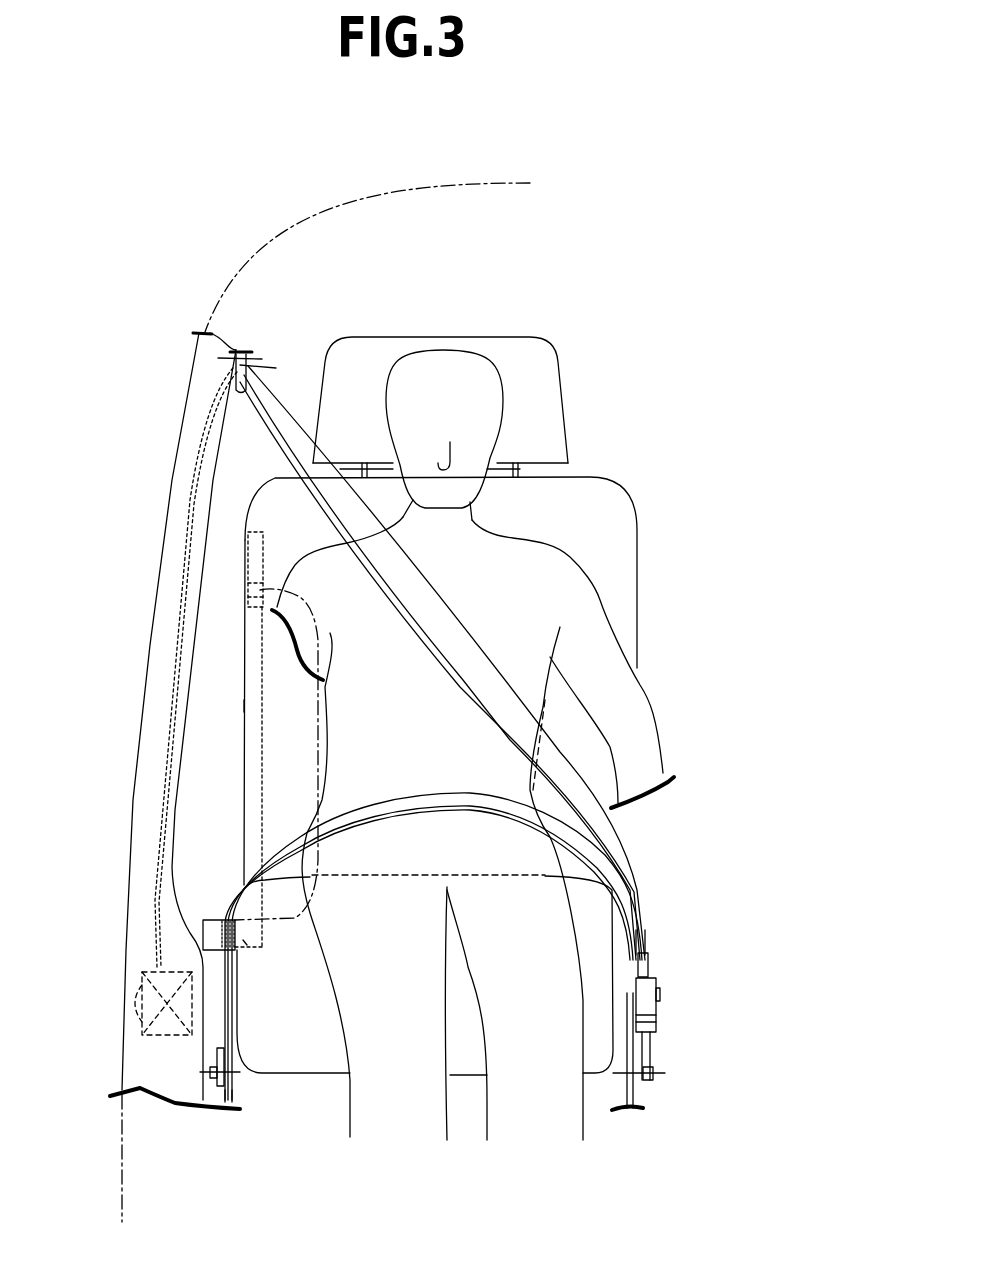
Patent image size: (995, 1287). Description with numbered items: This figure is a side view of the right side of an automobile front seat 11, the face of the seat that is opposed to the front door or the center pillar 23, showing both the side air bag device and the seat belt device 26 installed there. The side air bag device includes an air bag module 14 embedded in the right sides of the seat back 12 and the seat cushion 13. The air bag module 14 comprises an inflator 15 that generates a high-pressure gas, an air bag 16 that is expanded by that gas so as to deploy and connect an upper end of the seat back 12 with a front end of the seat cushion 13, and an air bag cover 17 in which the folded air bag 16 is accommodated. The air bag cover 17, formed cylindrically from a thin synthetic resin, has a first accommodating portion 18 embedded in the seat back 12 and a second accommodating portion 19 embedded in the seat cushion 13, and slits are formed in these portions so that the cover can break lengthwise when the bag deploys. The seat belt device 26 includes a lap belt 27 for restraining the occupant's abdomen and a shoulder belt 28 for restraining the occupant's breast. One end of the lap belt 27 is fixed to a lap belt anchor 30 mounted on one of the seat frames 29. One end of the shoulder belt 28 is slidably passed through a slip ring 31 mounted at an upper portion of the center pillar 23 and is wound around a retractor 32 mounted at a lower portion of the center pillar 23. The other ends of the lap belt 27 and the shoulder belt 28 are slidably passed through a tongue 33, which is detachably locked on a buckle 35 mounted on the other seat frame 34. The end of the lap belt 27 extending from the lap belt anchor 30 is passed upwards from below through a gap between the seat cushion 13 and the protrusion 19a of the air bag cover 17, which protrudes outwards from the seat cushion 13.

The front seat 11 is at (651, 581).
The seat back 12 is at (598, 500).
The seat cushion 13 is at (608, 950).
The air bag module 14 is at (236, 637).
The inflator 15 is at (247, 560).
The air bag 16 is at (330, 717).
The air bag cover 17 is at (242, 703).
The first accommodating portion 18 is at (240, 780).
The second accommodating portion 19 is at (247, 945).
The protrusion 19a is at (203, 935).
The center pillar 23 is at (150, 643).
The seat belt device 26 is at (664, 899).
The lap belt 27 is at (465, 797).
The shoulder belt 28 is at (465, 645).
The seat frame 29 is at (235, 1097).
The lap belt anchor 30 is at (213, 1060).
The slip ring 31 is at (239, 392).
The retractor 32 is at (130, 1015).
The tongue 33 is at (650, 975).
The seat frame 34 is at (637, 1093).
The buckle 35 is at (653, 1010).